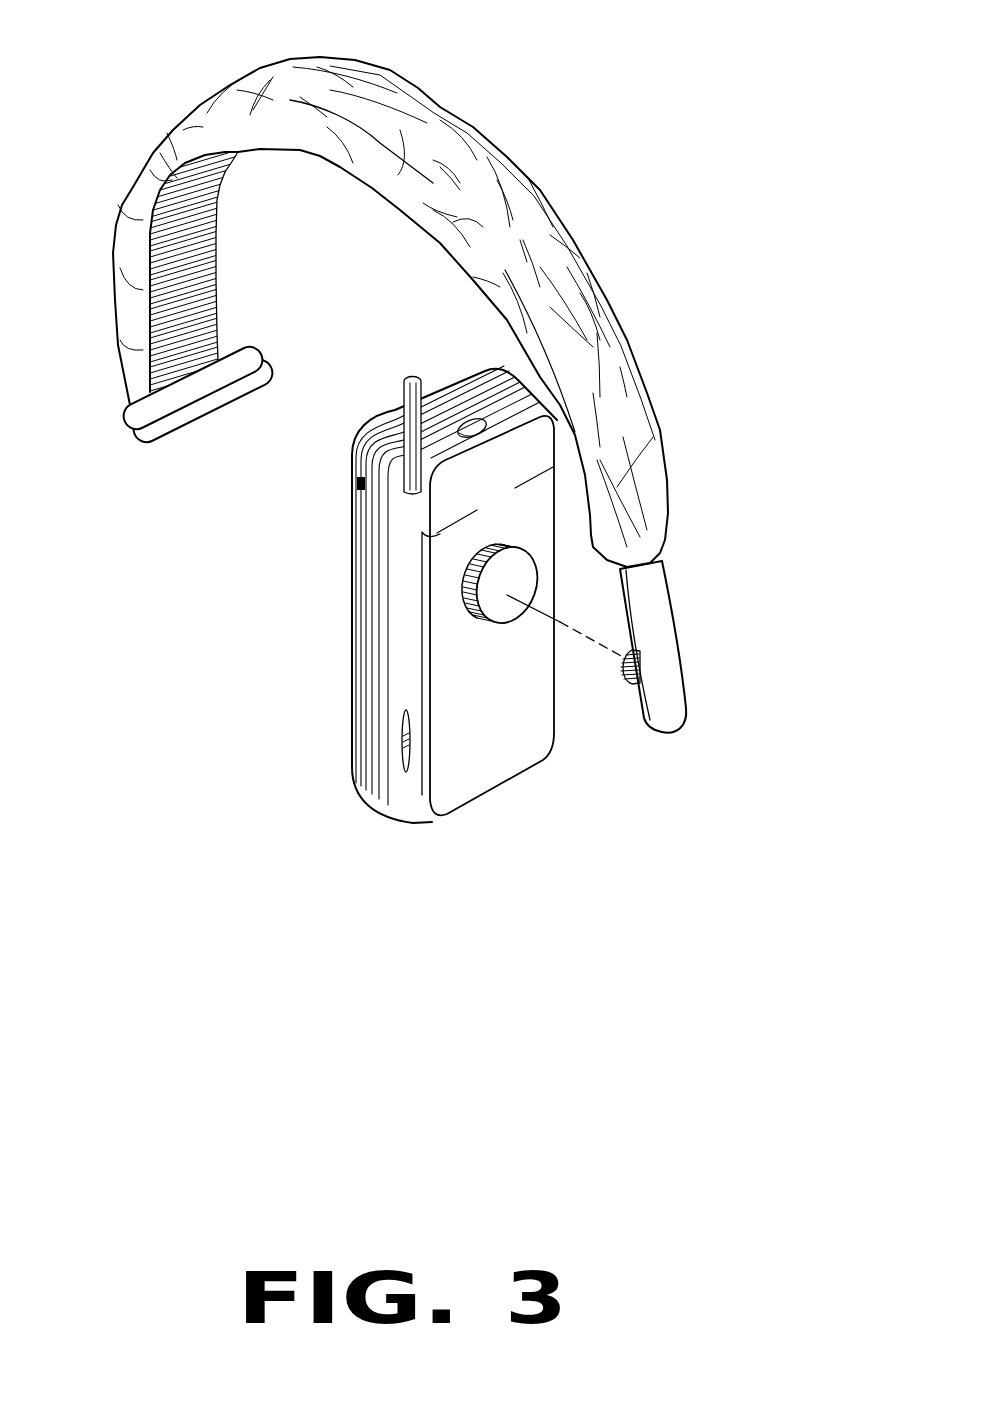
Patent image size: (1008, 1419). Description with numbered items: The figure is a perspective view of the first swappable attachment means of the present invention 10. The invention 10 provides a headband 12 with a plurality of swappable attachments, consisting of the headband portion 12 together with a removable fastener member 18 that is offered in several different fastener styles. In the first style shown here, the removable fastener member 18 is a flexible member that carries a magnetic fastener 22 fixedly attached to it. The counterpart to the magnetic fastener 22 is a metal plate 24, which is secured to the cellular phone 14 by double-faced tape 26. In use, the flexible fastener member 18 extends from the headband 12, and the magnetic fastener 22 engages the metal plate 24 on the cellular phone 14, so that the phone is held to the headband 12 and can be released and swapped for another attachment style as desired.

The present invention 10 is at (664, 290).
The headband 12 is at (364, 73).
The cellular phone 14 is at (405, 794).
The removable fastener member 18 is at (663, 670).
The magnetic fastener 22 is at (625, 660).
The metal plate 24 is at (470, 620).
The double-faced tape 26 is at (466, 580).